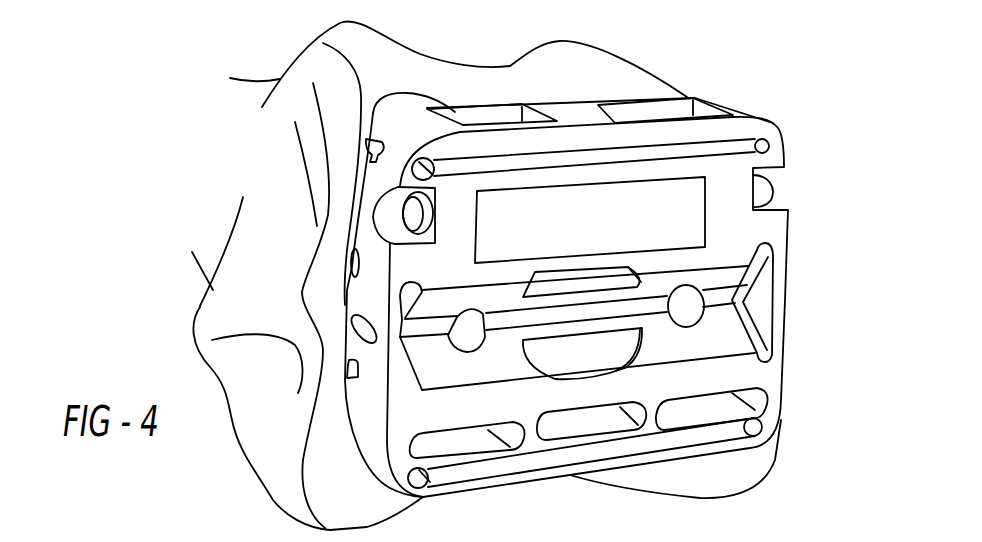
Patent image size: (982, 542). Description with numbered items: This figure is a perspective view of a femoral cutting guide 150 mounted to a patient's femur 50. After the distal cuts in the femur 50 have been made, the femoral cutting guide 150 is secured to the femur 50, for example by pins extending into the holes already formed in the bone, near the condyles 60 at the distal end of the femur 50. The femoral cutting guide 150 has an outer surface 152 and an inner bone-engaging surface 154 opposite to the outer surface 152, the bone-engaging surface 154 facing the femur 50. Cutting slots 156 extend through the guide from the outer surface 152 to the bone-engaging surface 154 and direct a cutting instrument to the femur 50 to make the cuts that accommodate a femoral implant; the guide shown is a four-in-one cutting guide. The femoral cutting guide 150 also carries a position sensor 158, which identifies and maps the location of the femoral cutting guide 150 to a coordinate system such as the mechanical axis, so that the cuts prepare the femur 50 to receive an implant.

The femur 50 is at (258, 125).
The condyles 60 is at (347, 493).
The femoral cutting guide 150 is at (772, 232).
The outer surface 152 is at (765, 375).
The inner bone-engaging surface 154 is at (346, 312).
The cutting slots 156 is at (715, 302).
The position sensor 158 is at (677, 197).